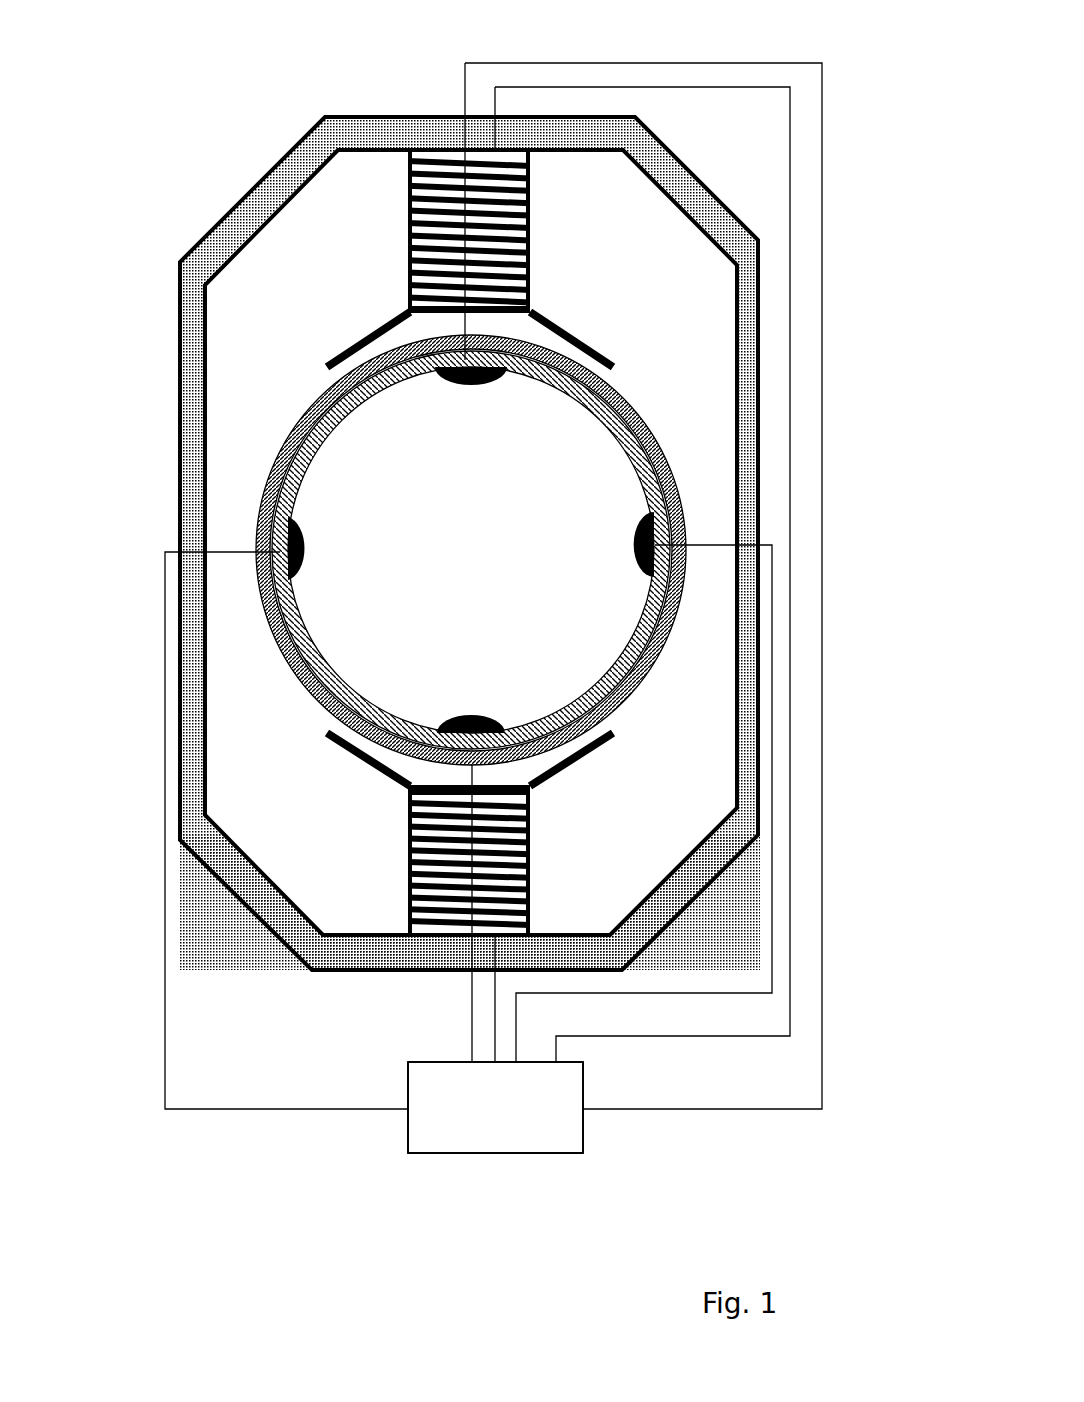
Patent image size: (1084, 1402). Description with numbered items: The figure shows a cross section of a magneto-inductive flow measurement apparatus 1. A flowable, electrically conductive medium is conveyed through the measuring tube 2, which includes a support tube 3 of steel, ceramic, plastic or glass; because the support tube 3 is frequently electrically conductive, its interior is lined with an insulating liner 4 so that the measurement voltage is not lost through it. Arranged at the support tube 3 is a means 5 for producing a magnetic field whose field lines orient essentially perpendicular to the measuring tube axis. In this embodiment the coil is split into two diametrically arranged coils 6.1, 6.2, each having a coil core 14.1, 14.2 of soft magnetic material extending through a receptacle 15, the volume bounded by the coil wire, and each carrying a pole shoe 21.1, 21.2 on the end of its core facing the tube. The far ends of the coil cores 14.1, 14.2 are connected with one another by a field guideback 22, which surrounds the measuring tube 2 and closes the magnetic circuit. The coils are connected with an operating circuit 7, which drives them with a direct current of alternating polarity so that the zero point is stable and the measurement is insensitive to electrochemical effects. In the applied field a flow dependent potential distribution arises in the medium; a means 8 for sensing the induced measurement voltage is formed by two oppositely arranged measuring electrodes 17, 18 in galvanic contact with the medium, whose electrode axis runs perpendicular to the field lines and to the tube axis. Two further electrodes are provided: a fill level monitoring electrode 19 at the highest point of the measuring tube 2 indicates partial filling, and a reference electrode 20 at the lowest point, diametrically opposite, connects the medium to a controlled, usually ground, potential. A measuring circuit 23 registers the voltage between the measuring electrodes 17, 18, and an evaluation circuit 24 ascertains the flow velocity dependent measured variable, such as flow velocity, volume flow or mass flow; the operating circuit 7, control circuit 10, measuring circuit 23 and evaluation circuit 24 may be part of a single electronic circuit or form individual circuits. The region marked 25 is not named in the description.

The magneto-inductive flow measurement apparatus 1 is at (188, 100).
The measuring tube 2 is at (295, 380).
The support tube 3 is at (267, 470).
The liner 4 is at (258, 513).
The means for producing a magnetic field 5 is at (393, 192).
The first coil 6.1 is at (420, 143).
The second coil 6.2 is at (408, 902).
The operating circuit 7 is at (493, 608).
The means for sensing the induced measurement voltage 8 is at (275, 530).
The control circuit 10 is at (495, 1107).
The first coil core 14.1 is at (517, 153).
The second coil core 14.2 is at (423, 930).
The receptacle 15 is at (533, 197).
The first measuring electrode 17 is at (660, 535).
The second measuring electrode 18 is at (273, 537).
The fill level monitoring electrode 19 is at (500, 357).
The reference electrode 20 is at (505, 721).
The first pole shoe 21.1 is at (552, 325).
The second pole shoe 21.2 is at (350, 753).
The field guideback 22 is at (758, 394).
The measuring circuit 23 is at (495, 1107).
The evaluation circuit 24 is at (495, 1107).
The interior space 25 is at (393, 852).